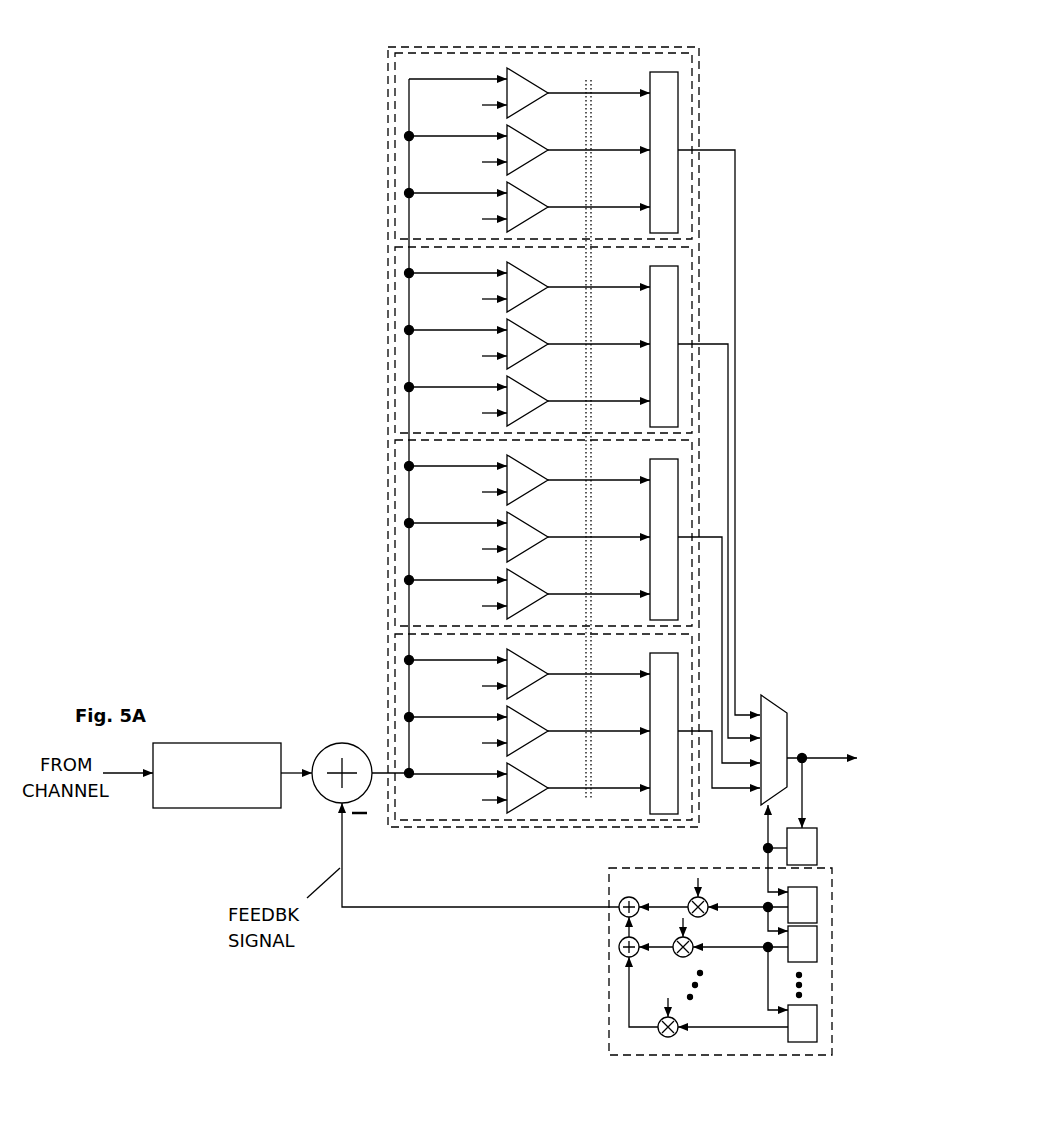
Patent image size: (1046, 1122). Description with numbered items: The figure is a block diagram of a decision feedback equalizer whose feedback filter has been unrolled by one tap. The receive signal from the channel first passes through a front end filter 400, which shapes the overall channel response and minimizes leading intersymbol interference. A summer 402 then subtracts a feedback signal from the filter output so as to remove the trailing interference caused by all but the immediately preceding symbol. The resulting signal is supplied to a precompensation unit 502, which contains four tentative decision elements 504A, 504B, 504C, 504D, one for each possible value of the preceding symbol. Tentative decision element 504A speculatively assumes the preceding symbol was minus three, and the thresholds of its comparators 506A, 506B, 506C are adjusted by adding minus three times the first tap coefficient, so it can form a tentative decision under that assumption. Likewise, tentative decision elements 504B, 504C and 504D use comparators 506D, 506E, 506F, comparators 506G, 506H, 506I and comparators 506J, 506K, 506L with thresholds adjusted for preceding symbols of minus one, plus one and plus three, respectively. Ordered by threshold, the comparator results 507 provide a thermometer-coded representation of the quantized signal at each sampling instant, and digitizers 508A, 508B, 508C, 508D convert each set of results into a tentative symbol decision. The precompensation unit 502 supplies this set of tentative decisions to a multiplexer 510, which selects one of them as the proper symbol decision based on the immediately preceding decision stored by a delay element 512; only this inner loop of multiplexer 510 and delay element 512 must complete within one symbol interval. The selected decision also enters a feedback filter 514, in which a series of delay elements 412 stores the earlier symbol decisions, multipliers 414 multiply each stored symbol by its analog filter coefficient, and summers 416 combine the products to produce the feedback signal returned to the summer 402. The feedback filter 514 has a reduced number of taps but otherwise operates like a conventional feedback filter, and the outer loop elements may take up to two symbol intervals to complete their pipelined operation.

The front end filter 400 is at (202, 808).
The summer 402 is at (321, 795).
The precompensation unit 502 is at (385, 730).
The tentative decision element 504A is at (393, 690).
The tentative decision element 504B is at (393, 496).
The tentative decision element 504C is at (393, 303).
The tentative decision element 504D is at (393, 109).
The comparator 506A is at (541, 772).
The comparator 506B is at (541, 715).
The comparator 506C is at (541, 658).
The comparator 506D is at (541, 578).
The comparator 506E is at (541, 521).
The comparator 506F is at (541, 464).
The comparator 506G is at (541, 385).
The comparator 506H is at (541, 328).
The comparator 506I is at (541, 271).
The comparator 506J is at (541, 191).
The comparator 506K is at (541, 134).
The comparator 506L is at (541, 77).
The comparator results 507 is at (588, 80).
The digitizer 508A is at (649, 807).
The digitizer 508B is at (649, 613).
The digitizer 508C is at (649, 420).
The digitizer 508D is at (649, 226).
The multiplexer 510 is at (763, 699).
The delay element 512 is at (817, 840).
The delay elements 412 is at (818, 952).
The multipliers 414 is at (691, 954).
The summers 416 is at (619, 946).
The feedback filter 514 is at (609, 1030).